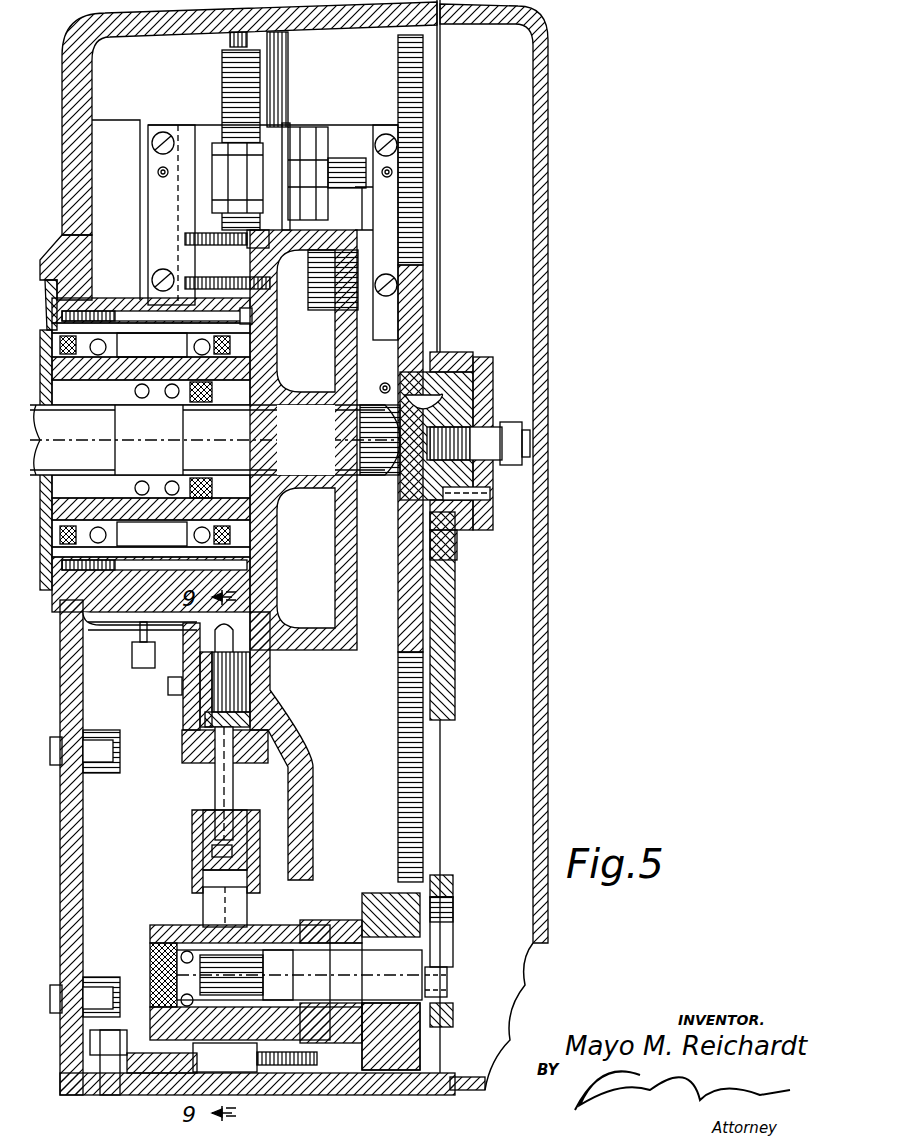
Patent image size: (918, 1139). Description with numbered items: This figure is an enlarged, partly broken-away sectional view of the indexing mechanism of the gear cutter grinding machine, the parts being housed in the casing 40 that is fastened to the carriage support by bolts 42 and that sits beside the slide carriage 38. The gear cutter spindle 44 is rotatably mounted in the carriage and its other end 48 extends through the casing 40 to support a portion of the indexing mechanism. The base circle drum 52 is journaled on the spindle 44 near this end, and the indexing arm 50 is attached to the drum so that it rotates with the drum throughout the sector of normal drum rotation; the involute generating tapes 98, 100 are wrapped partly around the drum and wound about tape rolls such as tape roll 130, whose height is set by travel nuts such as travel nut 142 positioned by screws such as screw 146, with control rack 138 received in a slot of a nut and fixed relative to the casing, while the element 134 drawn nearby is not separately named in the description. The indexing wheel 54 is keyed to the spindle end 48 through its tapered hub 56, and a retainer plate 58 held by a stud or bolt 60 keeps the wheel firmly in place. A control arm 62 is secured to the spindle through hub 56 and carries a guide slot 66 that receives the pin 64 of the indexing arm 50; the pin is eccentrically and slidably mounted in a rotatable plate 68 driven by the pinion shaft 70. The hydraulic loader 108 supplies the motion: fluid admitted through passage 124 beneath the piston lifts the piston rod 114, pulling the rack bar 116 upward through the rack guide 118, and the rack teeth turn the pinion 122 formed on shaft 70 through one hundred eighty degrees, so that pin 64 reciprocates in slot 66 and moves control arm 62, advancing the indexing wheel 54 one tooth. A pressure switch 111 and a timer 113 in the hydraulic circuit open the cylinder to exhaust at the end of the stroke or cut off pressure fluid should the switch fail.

The slide carriage 38 is at (55, 512).
The casing 40 is at (83, 880).
The bolts 42 is at (58, 742).
The gear cutter spindle 44 is at (48, 418).
The other end of spindle 48 is at (400, 488).
The indexing arm 50 is at (313, 778).
The base circle drum 52 is at (322, 645).
The indexing wheel 54 is at (398, 712).
The hub 56 is at (445, 368).
The retainer plate 58 is at (490, 355).
The stud or bolt 60 is at (503, 462).
The control arm 62 is at (445, 637).
The pin 64 is at (447, 975).
The guide slot 66 is at (453, 935).
The rotatable plate 68 is at (420, 1047).
The pinion shaft 70 is at (300, 945).
The involute generating tape 98 is at (355, 222).
The involute generating tape 100 is at (305, 252).
The hydraulic loader 108 is at (180, 757).
The pressure switch 111 is at (168, 682).
The timer 113 is at (132, 673).
The piston rod 114 is at (215, 798).
The rack bar 116 is at (205, 852).
The rack guide 118 is at (197, 818).
The pinion 122 is at (228, 970).
The passage 124 is at (200, 715).
The tape roll 130 is at (315, 127).
The shaft 134 is at (230, 42).
The control rack 138 is at (222, 97).
The travel nut 142 is at (295, 128).
The screw 146 is at (288, 65).